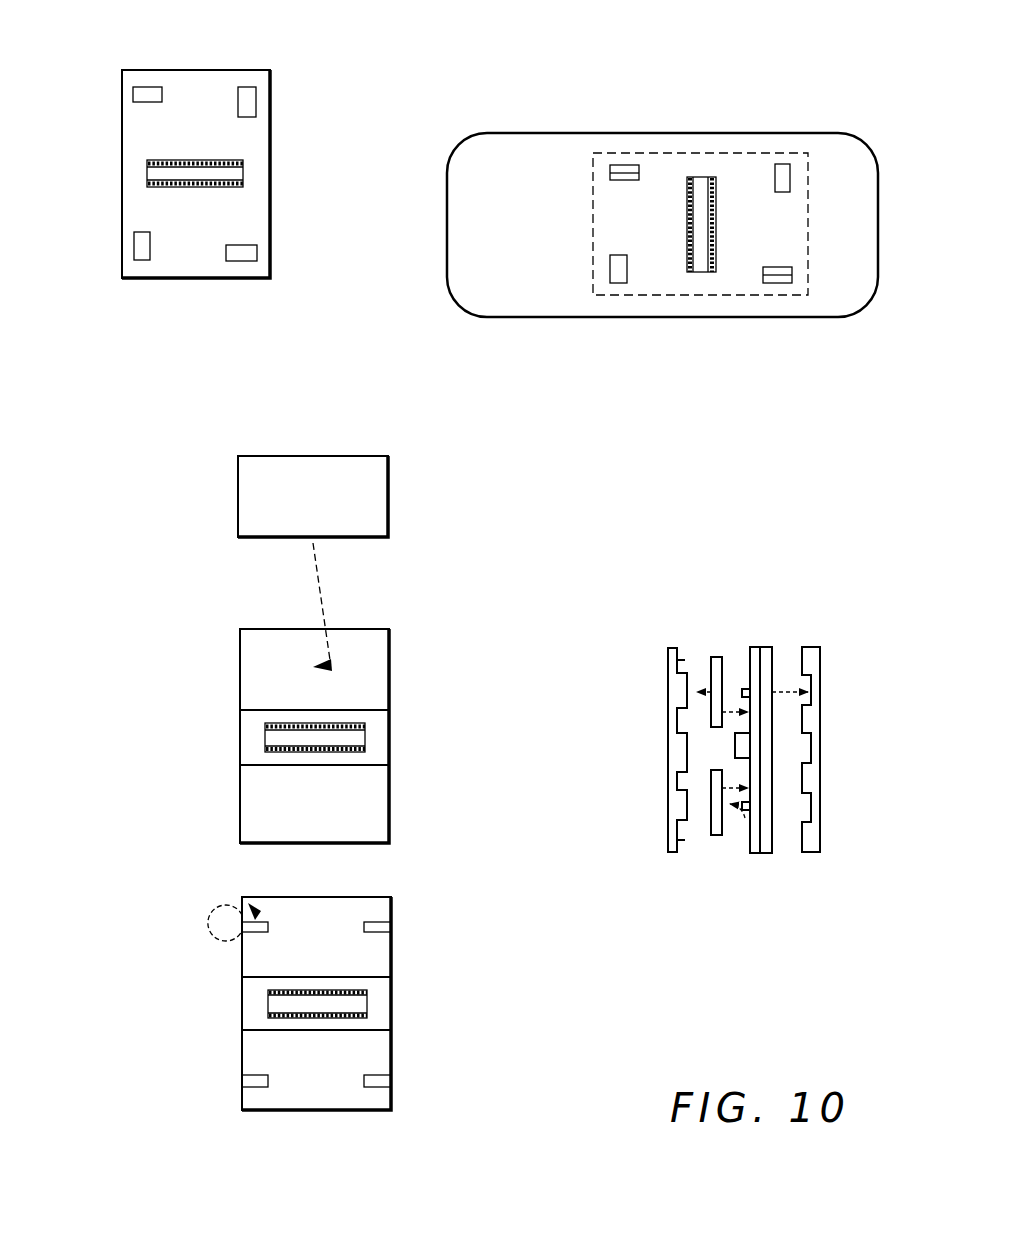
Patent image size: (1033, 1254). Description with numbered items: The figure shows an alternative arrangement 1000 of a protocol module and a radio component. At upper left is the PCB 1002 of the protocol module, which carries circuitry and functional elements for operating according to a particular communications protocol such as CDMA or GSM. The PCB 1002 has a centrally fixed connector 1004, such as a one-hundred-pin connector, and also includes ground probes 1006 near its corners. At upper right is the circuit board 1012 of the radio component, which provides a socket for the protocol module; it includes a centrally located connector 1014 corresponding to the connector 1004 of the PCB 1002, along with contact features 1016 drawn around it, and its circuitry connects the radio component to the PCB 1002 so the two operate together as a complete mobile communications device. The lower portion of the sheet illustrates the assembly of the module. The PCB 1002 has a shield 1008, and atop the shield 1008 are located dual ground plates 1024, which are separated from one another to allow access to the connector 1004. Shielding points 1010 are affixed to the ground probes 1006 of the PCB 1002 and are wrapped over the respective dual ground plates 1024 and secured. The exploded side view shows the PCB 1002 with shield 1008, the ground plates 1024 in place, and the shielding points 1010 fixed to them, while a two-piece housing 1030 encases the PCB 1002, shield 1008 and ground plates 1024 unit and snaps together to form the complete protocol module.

The alternative arrangement 1000 is at (860, 90).
The PCB 1002 is at (272, 138).
The connector 1004 is at (243, 172).
The ground probes 1006 is at (133, 93).
The shield 1008 is at (756, 853).
The shielding points 1010 is at (382, 927).
The circuit board 1012 is at (705, 133).
The connector 1014 is at (700, 272).
The contact pads 1016 is at (782, 163).
The dual ground plates 1024 is at (238, 495).
The two-piece housing 1030 is at (673, 647).